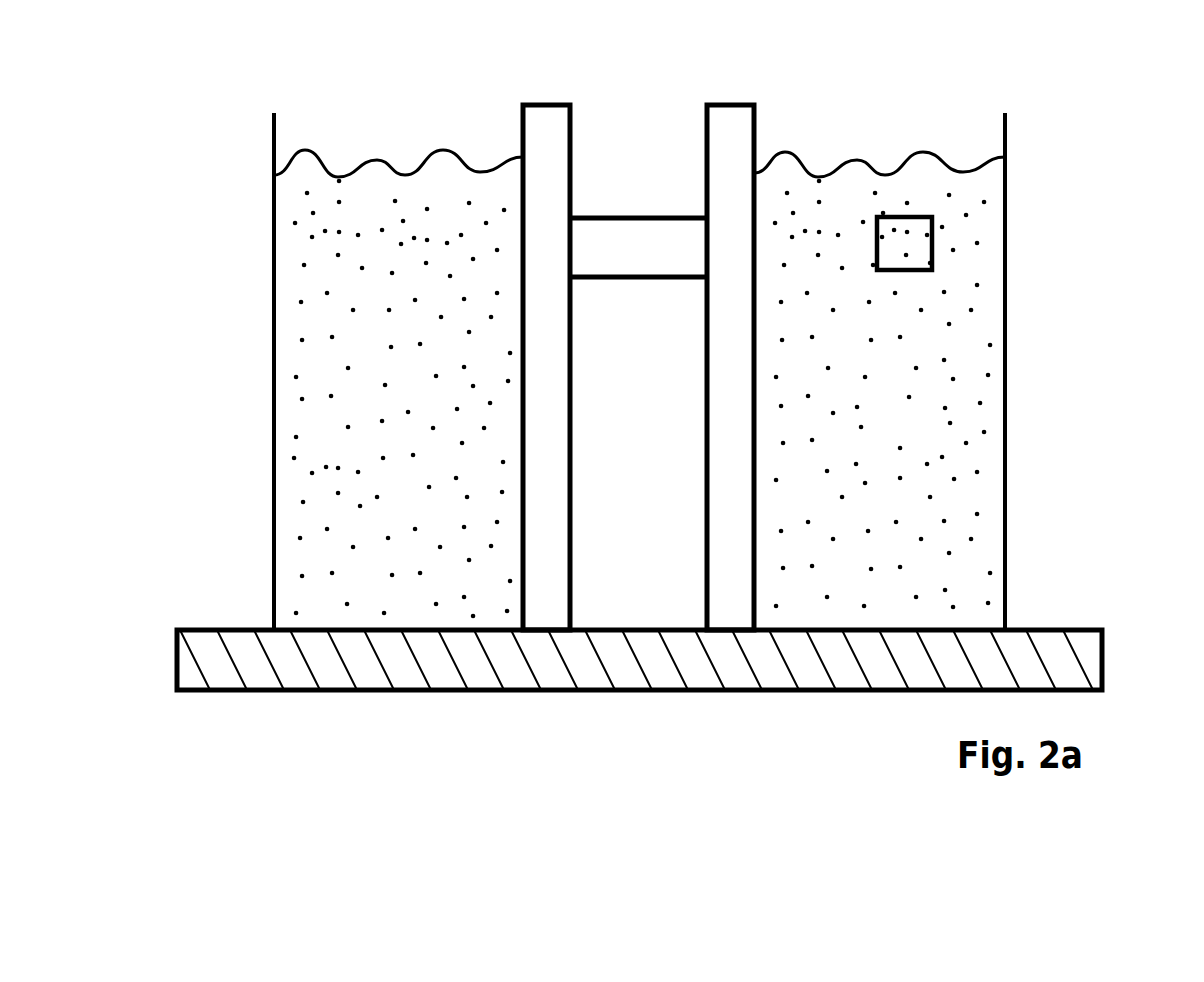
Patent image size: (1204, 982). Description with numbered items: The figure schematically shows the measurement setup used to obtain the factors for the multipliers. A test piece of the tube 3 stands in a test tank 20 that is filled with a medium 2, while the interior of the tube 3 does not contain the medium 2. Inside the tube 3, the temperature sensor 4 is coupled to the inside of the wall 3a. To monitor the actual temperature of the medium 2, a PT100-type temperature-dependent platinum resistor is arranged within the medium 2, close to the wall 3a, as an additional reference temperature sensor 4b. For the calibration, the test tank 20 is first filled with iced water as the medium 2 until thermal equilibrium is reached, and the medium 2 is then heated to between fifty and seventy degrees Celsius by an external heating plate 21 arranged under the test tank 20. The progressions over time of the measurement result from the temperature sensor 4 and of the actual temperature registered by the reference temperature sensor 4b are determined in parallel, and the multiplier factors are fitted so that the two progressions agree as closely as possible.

The medium 2 is at (406, 513).
The tube 3 is at (583, 320).
The wall 3a is at (523, 135).
The temperature sensor 4 is at (620, 262).
The reference temperature sensor 4b is at (905, 215).
The test tank 20 is at (273, 440).
The external heating plate 21 is at (1102, 657).